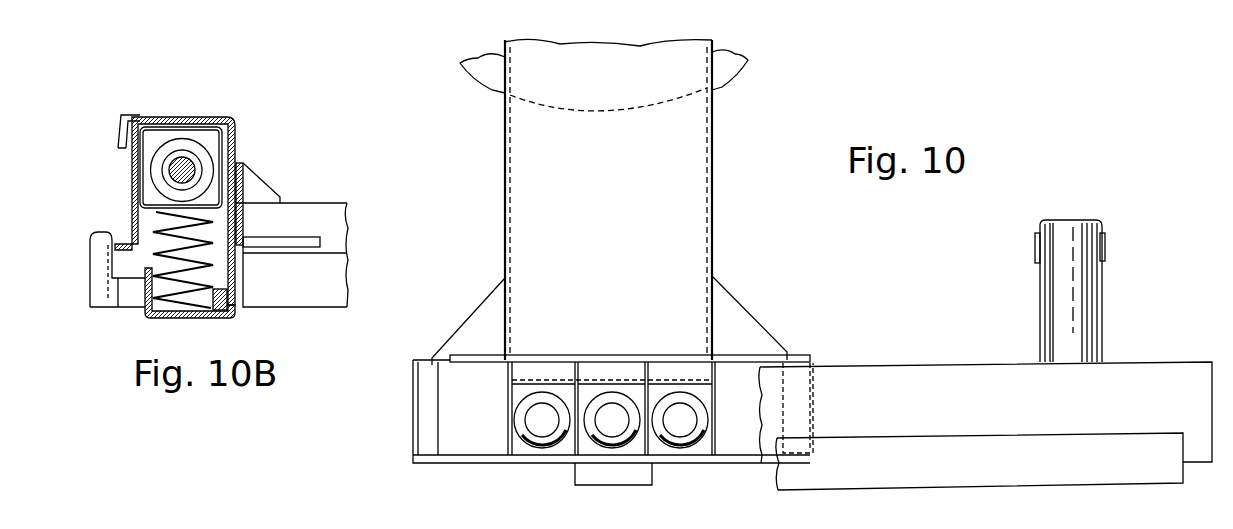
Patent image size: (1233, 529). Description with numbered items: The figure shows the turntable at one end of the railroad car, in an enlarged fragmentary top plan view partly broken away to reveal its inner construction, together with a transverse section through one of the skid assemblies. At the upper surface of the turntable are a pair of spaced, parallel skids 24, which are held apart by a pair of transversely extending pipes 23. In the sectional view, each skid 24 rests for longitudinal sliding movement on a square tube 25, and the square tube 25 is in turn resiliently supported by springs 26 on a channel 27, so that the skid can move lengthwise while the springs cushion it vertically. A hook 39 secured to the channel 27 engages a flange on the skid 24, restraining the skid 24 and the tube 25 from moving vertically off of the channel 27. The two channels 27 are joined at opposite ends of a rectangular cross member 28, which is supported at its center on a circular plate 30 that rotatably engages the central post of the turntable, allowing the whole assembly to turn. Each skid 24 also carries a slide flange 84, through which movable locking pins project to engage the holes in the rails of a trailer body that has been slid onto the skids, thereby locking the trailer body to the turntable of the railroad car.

In FIG. 10, the transversely extending pipe 23 is at (1103, 318).
In FIG. 10B, the skid 24 is at (226, 117).
In FIG. 10, the skid 24 is at (906, 365).
In FIG. 10B, the square tube 25 is at (224, 141).
In FIG. 10B, the spring 26 is at (216, 270).
In FIG. 10, the spring 26 is at (537, 443).
In FIG. 10B, the channel 27 is at (237, 317).
In FIG. 10, the channel 27 is at (700, 455).
In FIG. 10B, the rectangular cross member 28 is at (314, 203).
In FIG. 10, the rectangular cross member 28 is at (712, 217).
In FIG. 10, the circular plate 30 is at (712, 88).
In FIG. 10B, the hook 39 is at (100, 306).
In FIG. 10B, the slide flange 84 is at (118, 143).
In FIG. 10, the slide flange 84 is at (982, 483).